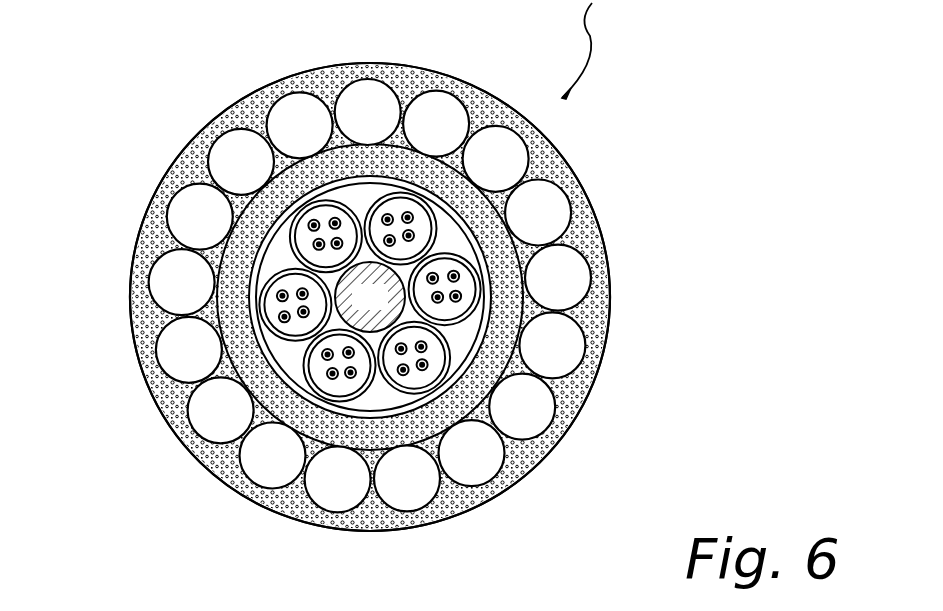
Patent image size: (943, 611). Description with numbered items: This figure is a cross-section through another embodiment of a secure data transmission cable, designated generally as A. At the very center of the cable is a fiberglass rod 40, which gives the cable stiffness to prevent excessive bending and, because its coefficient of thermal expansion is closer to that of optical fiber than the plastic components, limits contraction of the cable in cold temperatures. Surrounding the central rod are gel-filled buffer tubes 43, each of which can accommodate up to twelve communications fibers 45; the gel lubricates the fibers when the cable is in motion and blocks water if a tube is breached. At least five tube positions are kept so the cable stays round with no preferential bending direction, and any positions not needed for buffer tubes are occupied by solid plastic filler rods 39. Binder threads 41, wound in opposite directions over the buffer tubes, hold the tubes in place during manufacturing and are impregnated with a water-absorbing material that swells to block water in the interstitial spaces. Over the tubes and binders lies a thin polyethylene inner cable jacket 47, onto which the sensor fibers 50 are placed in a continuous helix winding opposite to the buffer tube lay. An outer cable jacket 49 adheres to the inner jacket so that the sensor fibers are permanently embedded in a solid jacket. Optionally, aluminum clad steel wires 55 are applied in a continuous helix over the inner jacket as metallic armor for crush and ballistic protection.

The solid plastic filler rods 39 is at (362, 203).
The fiberglass rod 40 is at (354, 309).
The binder threads 41 is at (250, 210).
The buffer tubes 43 is at (568, 160).
The communications fibers 45 is at (580, 227).
The inner cable jacket 47 is at (540, 293).
The outer cable jacket 49 is at (595, 312).
The sensor fibers 50 is at (250, 233).
The aluminum clad steel wires 55 is at (470, 352).
The secure data transmission cable A is at (569, 51).